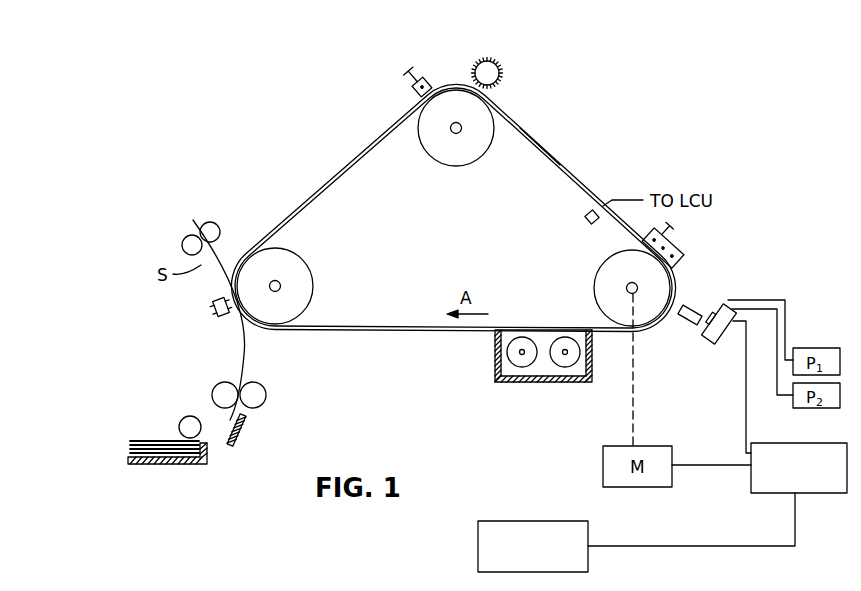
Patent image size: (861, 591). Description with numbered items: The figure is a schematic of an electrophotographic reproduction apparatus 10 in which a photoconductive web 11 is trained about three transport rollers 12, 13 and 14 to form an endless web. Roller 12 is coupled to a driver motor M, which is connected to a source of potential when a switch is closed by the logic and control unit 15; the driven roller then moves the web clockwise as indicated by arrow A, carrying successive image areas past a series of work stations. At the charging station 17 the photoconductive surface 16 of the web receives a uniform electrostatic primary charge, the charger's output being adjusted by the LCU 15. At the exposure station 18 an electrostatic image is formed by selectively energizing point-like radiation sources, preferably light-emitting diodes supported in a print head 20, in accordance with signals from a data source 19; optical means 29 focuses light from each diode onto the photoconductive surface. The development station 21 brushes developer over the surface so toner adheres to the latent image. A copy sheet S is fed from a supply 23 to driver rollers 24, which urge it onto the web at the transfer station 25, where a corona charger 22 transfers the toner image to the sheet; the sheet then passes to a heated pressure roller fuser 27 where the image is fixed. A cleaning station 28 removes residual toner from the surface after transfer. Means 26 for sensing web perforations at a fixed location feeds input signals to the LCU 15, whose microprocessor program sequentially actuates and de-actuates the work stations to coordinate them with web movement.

The electrophotographic reproduction apparatus 10 is at (313, 58).
The photoconductive web 11 is at (291, 211).
The transport roller 12 is at (607, 261).
The transport roller 13 is at (438, 164).
The transport roller 14 is at (313, 265).
The logic and control unit 15 is at (745, 489).
The photoconductive surface 16 is at (548, 153).
The charging station 17 is at (697, 253).
The exposure station 18 is at (718, 294).
The data source 19 is at (590, 559).
The print head 20 is at (715, 346).
The development station 21 is at (478, 378).
The corona charger 22 is at (194, 311).
The supply 23 is at (176, 466).
The driver rollers 24 is at (220, 384).
The transfer station 25 is at (166, 365).
The means sensing web perforations 26 is at (585, 214).
The heated pressure roller fuser 27 is at (172, 227).
The cleaning station 28 is at (503, 69).
The optical means 29 is at (689, 324).